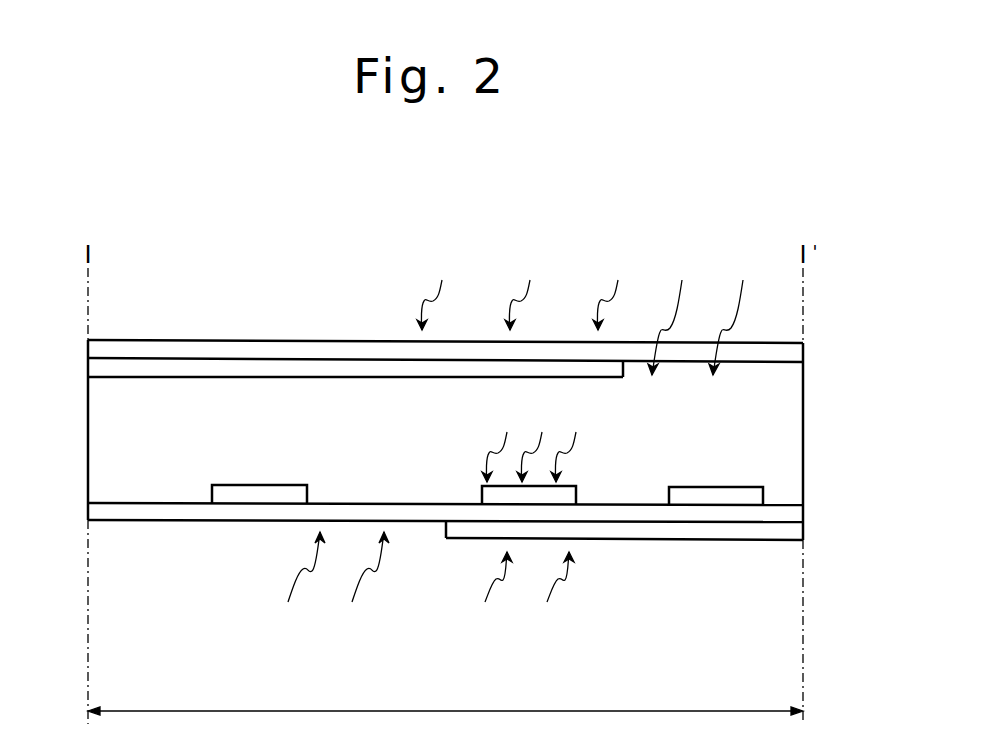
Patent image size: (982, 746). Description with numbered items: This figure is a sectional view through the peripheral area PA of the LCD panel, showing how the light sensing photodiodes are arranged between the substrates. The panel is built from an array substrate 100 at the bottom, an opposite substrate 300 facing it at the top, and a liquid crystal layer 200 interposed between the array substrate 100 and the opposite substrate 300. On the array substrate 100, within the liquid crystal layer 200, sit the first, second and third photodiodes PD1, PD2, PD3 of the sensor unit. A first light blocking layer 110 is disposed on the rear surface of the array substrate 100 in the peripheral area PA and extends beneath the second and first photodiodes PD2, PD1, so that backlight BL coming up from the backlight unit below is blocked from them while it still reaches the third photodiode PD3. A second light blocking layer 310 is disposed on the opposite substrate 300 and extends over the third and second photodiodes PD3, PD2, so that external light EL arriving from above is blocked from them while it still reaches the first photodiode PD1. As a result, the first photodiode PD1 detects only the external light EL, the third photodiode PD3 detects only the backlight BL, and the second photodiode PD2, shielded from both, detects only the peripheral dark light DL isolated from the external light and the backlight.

The opposite substrate 300 is at (793, 354).
The second light blocking layer 310 is at (98, 367).
The liquid crystal layer 200 is at (98, 437).
The array substrate 100 is at (98, 510).
The first light blocking layer 110 is at (793, 532).
The first photodiode PD1 is at (713, 486).
The second photodiode PD2 is at (571, 487).
The third photodiode PD3 is at (258, 485).
The external light EL is at (753, 285).
The dark light DL is at (488, 433).
The backlight BL is at (613, 600).
The peripheral area PA is at (445, 700).